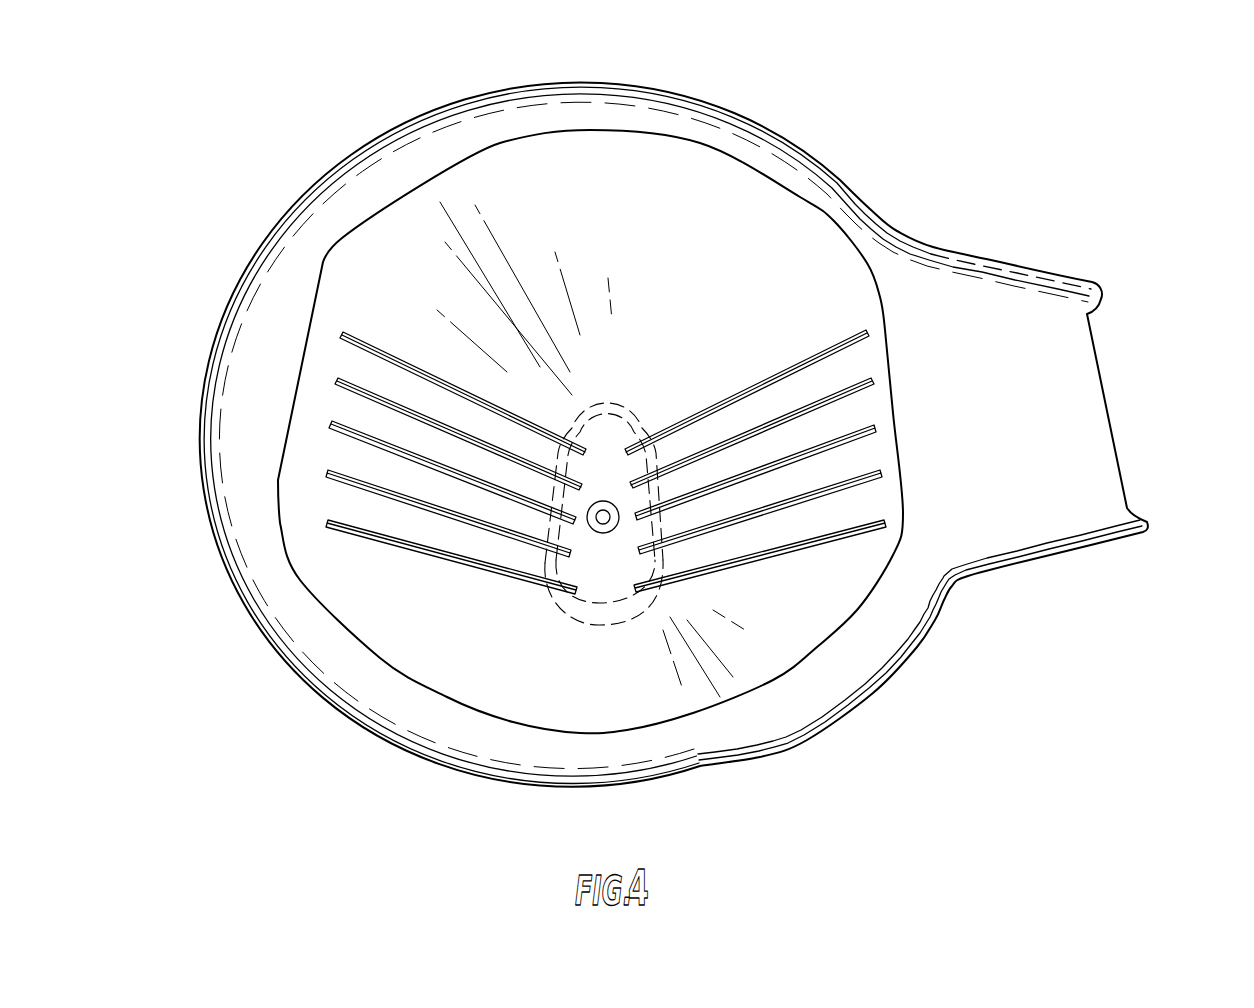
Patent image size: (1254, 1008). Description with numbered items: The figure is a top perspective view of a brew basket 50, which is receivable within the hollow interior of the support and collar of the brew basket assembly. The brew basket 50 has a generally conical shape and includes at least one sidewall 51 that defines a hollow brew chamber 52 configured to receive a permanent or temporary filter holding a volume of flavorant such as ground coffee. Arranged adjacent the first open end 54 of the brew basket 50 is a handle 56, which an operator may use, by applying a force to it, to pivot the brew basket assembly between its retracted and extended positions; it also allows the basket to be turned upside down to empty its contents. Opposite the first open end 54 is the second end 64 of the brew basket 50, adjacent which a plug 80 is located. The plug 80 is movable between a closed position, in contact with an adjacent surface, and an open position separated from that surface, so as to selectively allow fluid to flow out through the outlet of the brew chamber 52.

The brew basket 50 is at (702, 432).
The sidewall 51 is at (820, 607).
The brew chamber 52 is at (675, 203).
The first open end 54 is at (453, 140).
The handle 56 is at (1087, 463).
The second end 64 is at (612, 617).
The plug 80 is at (605, 519).